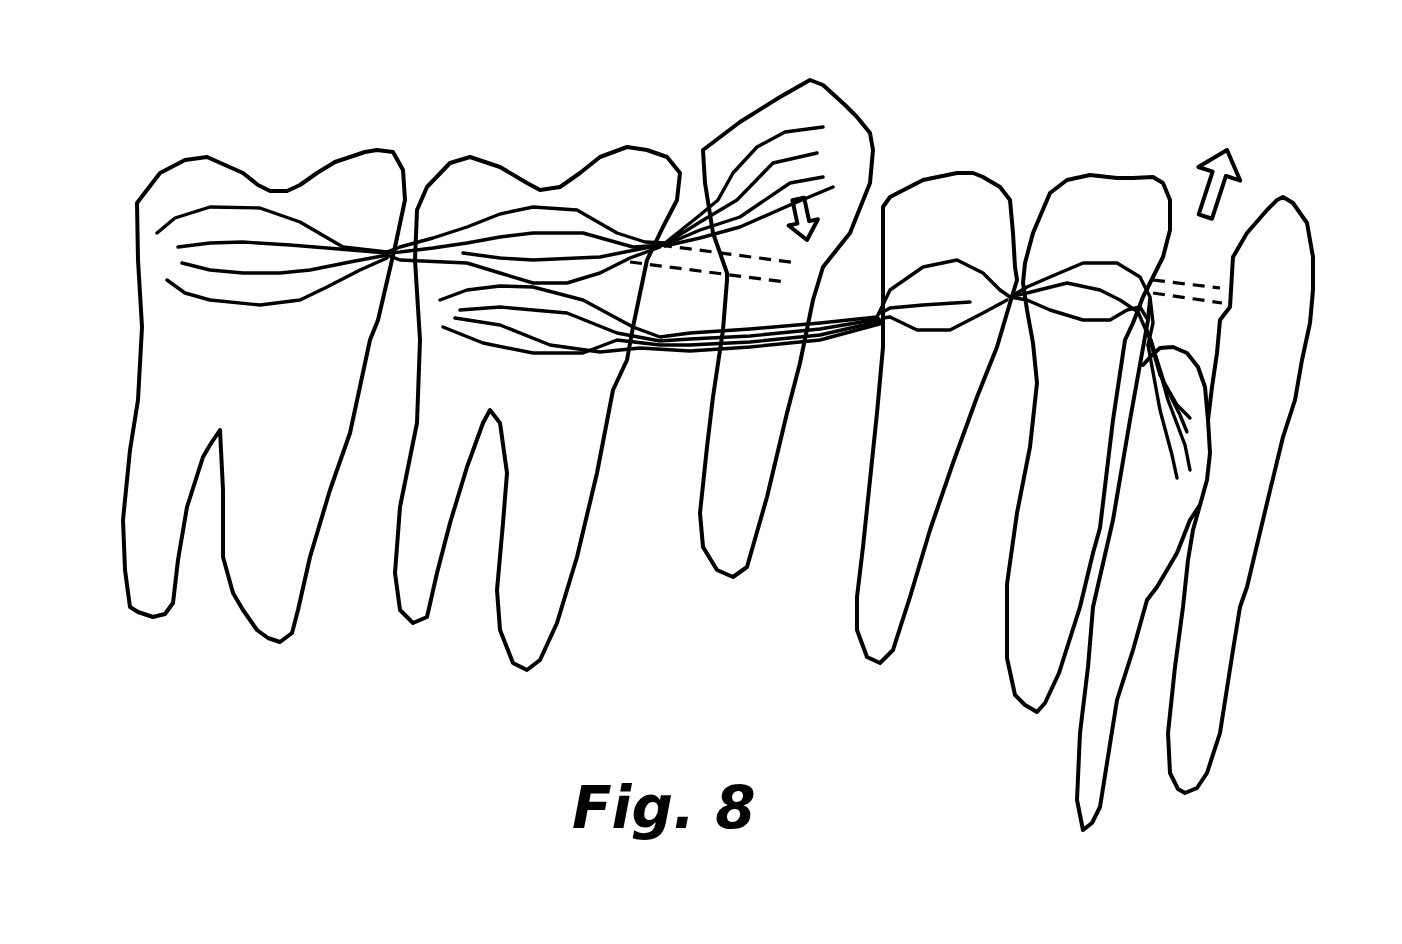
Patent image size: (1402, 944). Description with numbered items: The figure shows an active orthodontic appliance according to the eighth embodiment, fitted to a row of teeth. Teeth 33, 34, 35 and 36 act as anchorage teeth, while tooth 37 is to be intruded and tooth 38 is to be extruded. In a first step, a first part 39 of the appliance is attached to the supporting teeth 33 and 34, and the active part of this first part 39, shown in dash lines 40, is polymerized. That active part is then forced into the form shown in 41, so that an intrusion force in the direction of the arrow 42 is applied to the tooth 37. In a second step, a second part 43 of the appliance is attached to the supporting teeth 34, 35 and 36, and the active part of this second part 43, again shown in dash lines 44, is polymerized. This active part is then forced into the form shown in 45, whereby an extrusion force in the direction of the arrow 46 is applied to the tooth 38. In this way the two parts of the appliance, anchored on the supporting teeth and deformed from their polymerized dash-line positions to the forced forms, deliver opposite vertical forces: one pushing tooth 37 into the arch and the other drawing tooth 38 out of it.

The tooth 33 is at (368, 200).
The tooth 34 is at (636, 195).
The tooth 35 is at (957, 210).
The tooth 36 is at (1110, 207).
The tooth 37 is at (833, 117).
The tooth 38 is at (1148, 538).
The first part 39 is at (544, 205).
The dash lines 40 is at (878, 207).
The form 41 is at (785, 130).
The arrow 42 is at (808, 263).
The second part 43 is at (836, 323).
The dash lines 44 is at (1170, 279).
The form 45 is at (1163, 407).
The arrow 46 is at (1227, 150).